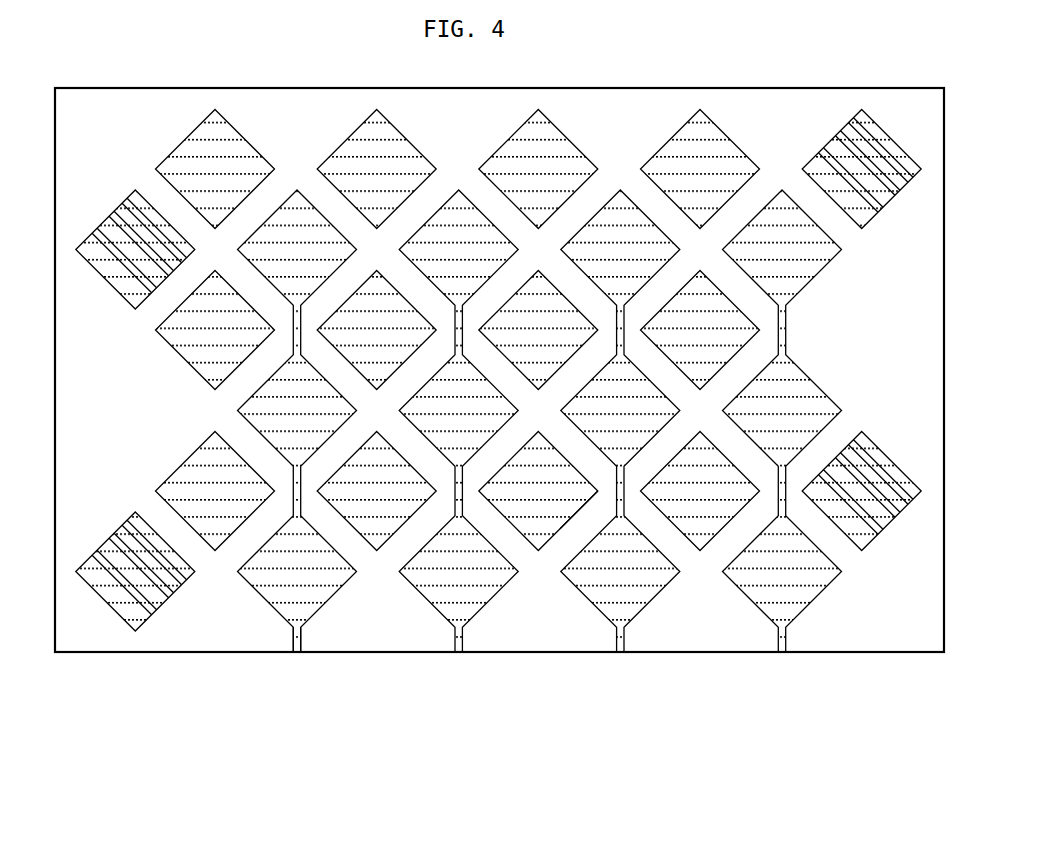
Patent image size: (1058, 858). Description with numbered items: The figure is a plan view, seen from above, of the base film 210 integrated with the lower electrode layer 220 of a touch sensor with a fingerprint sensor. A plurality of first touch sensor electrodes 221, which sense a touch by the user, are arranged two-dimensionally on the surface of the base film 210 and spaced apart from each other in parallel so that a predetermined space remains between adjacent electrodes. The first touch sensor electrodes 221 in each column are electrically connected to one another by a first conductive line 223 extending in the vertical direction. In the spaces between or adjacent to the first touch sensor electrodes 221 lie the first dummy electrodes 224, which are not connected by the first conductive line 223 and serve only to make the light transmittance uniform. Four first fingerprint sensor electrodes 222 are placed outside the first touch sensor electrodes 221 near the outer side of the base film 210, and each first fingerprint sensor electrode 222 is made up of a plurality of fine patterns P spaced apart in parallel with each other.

The base film 210 is at (903, 653).
The lower electrode layer 220 is at (498, 453).
The first touch sensor electrode 221 is at (275, 607).
The first fingerprint sensor electrode 222 is at (172, 630).
The first conductive line 223 is at (302, 637).
The first dummy electrode 224 is at (553, 537).
The pattern P is at (118, 606).